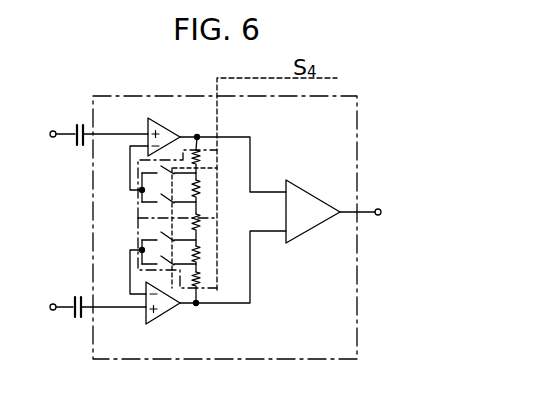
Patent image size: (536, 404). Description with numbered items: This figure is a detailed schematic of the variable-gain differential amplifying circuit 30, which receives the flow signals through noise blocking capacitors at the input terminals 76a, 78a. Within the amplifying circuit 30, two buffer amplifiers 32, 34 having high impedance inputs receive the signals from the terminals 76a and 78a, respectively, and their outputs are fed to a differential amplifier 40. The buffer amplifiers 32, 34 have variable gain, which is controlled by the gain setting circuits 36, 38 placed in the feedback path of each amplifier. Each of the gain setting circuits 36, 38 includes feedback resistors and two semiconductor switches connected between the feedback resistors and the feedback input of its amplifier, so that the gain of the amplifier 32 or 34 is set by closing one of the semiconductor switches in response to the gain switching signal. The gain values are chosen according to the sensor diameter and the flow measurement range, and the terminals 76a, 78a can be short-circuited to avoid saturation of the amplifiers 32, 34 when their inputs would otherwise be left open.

The differential amplifying circuit 30 is at (357, 115).
The buffer amplifier 32 is at (166, 124).
The buffer amplifier 34 is at (168, 308).
The gain setting circuit 36 is at (137, 207).
The gain setting circuit 38 is at (137, 242).
The differential amplifier 40 is at (308, 194).
The terminal 76a is at (53, 131).
The terminal 78a is at (53, 310).